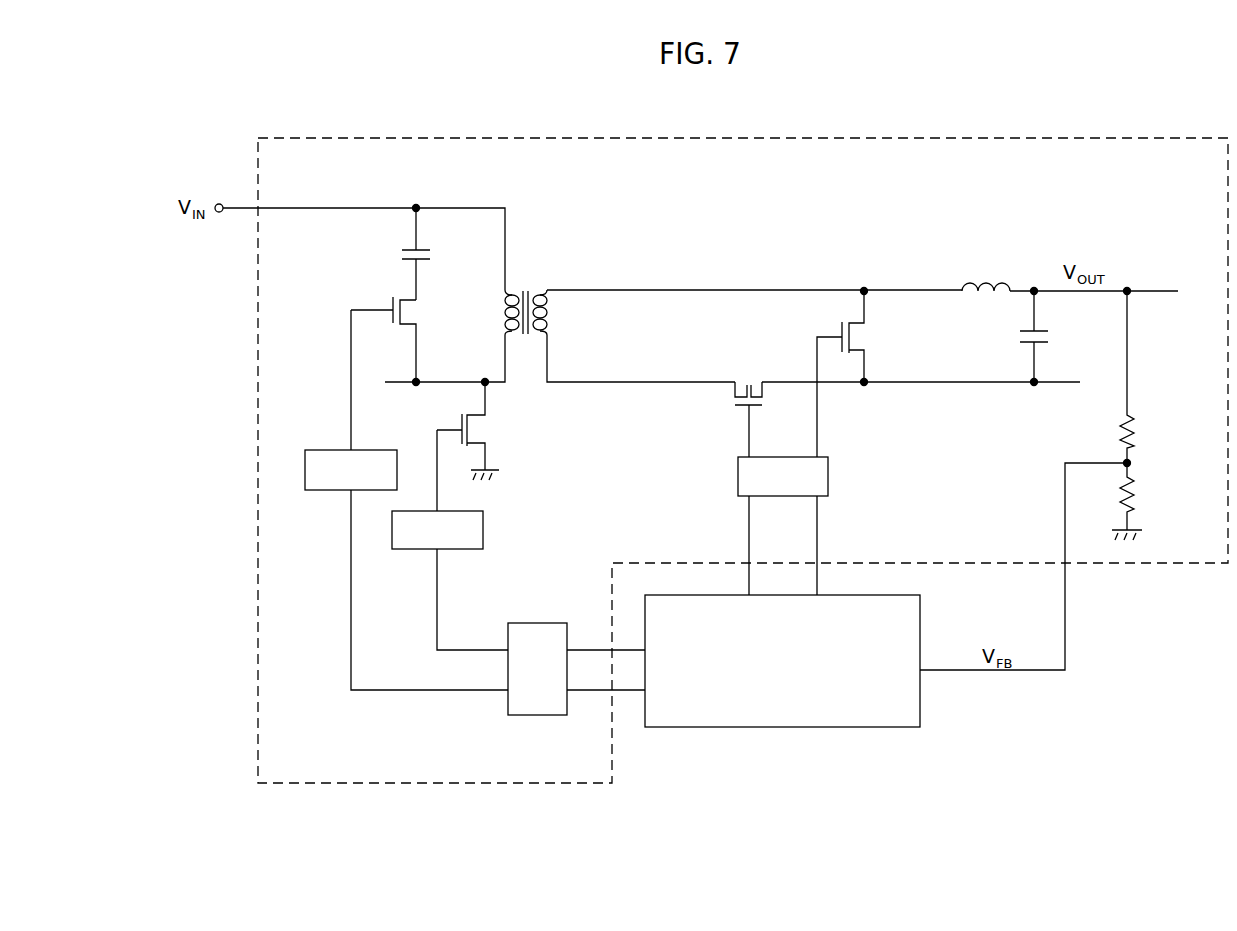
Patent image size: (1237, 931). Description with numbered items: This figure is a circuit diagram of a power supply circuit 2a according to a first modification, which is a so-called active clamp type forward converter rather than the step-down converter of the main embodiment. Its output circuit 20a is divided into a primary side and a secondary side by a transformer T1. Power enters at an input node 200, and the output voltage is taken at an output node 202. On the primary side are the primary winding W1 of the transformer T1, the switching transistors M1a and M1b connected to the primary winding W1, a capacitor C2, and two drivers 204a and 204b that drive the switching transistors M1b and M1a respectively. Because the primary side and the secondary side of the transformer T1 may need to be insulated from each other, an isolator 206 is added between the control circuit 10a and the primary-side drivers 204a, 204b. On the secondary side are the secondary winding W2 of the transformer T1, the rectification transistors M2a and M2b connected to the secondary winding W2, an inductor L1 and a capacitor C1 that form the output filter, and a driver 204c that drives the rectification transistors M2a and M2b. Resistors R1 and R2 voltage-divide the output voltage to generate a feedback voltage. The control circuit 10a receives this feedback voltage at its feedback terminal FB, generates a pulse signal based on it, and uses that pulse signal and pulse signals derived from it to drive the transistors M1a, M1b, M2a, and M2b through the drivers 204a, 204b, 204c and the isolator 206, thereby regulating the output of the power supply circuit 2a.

The output circuit 20a is at (843, 138).
The power supply circuit 2a is at (716, 856).
The input terminal 200 is at (300, 218).
The output terminal 202 is at (1155, 290).
The driver 204a is at (390, 429).
The driver 204b is at (486, 526).
The driver 204c is at (832, 472).
The isolator 206 is at (535, 716).
The control circuit 10a is at (768, 728).
The capacitor C1 is at (1052, 338).
The capacitor C2 is at (433, 253).
The inductor L1 is at (987, 280).
The resistor R1 is at (1136, 430).
The resistor R2 is at (1136, 493).
The transformer T1 is at (620, 291).
The primary winding W1 is at (512, 285).
The secondary winding W2 is at (541, 285).
The switching transistor M1a is at (490, 429).
The switching transistor M1b is at (424, 311).
The rectification transistor M2a is at (873, 331).
The rectification transistor M2b is at (732, 401).